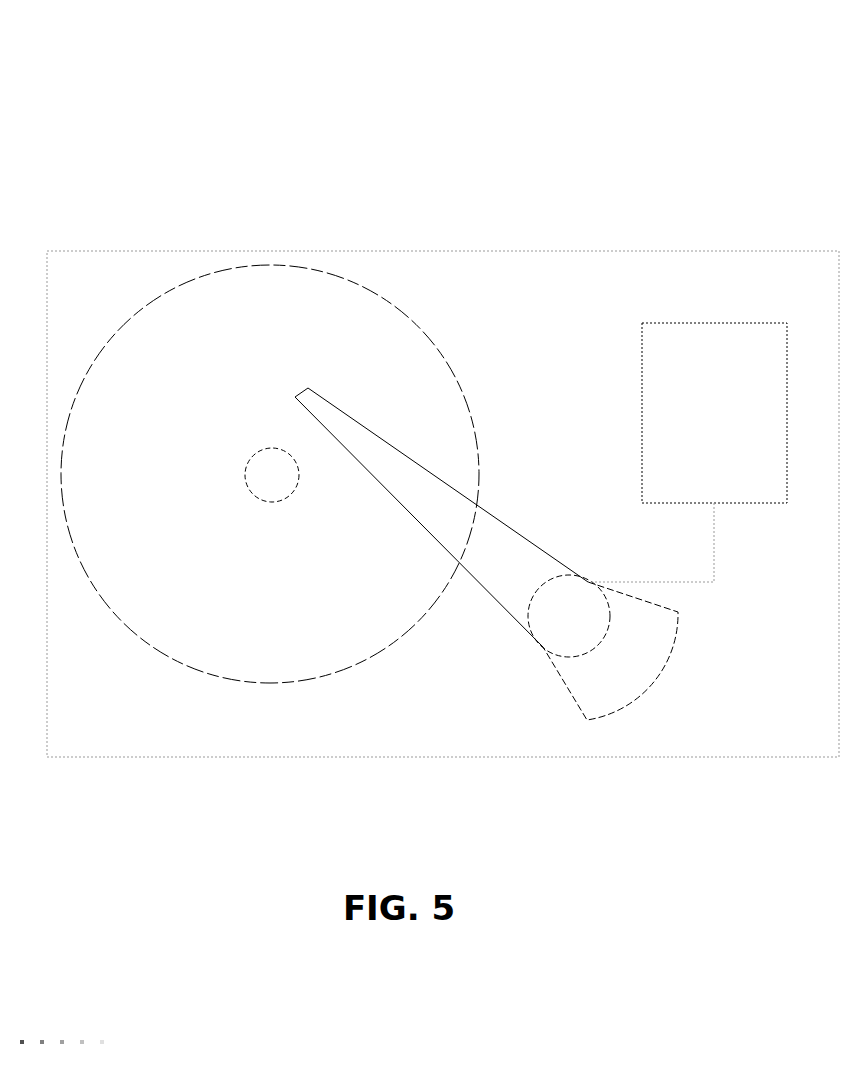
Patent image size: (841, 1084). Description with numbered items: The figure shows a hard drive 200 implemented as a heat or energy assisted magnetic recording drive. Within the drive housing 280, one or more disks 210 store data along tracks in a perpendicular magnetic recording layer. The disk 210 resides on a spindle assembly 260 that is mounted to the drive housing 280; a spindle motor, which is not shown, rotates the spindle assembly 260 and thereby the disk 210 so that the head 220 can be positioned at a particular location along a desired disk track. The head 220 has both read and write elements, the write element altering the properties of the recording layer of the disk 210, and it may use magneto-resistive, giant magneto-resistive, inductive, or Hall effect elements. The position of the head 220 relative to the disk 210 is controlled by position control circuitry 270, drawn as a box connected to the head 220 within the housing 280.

The hard drive 200 is at (530, 71).
The disk 210 is at (182, 663).
The head 220 is at (330, 402).
The spindle assembly 260 is at (259, 484).
The position control circuitry 270 is at (702, 421).
The drive housing 280 is at (588, 250).